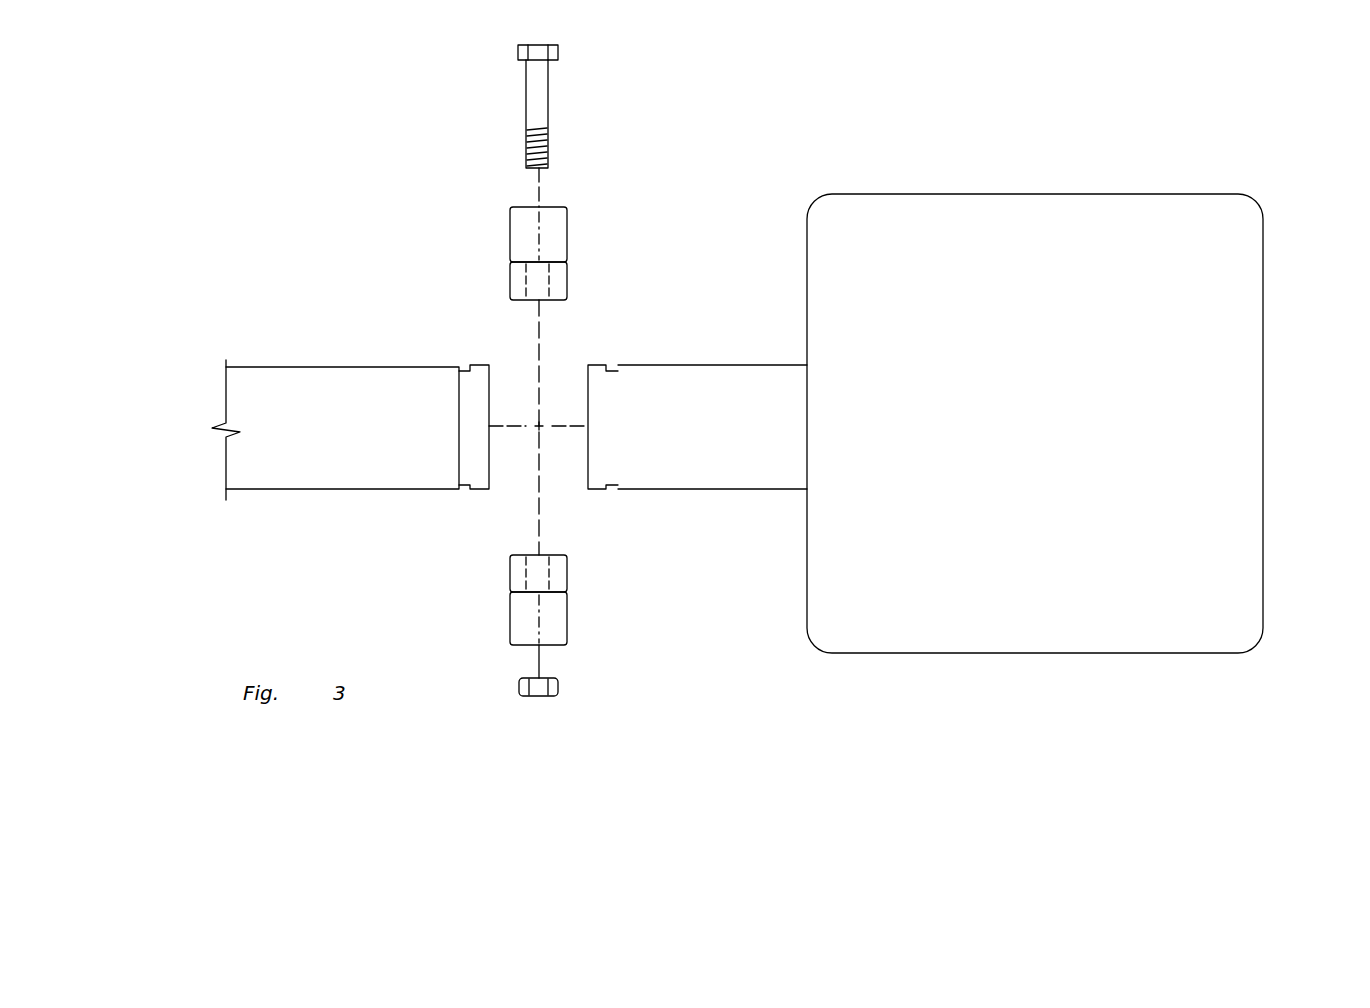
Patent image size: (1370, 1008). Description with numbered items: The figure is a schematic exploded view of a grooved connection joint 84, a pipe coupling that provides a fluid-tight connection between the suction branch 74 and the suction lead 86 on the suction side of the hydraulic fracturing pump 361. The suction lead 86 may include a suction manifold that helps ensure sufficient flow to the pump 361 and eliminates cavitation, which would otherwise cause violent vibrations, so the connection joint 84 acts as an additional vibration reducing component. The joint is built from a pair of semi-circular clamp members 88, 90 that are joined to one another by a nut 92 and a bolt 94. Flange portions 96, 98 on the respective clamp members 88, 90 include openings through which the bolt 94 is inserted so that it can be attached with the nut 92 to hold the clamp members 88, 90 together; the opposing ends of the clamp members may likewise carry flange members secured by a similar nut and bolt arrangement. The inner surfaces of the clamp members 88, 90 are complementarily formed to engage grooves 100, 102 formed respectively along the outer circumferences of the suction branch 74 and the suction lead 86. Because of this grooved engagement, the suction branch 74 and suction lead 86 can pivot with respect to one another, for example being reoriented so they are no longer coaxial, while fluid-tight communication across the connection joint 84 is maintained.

The bolt 94 is at (549, 93).
The semi-circular clamp member 88 is at (561, 232).
The flange portion 96 is at (561, 278).
The flange portion 98 is at (561, 577).
The semi-circular clamp member 90 is at (561, 620).
The nut 92 is at (559, 688).
The suction branch 74 is at (293, 366).
The groove 100 is at (465, 365).
The groove 102 is at (614, 365).
The suction lead 86 is at (712, 365).
The pump 361 is at (1264, 423).
The grooved connection joint 84 is at (377, 233).